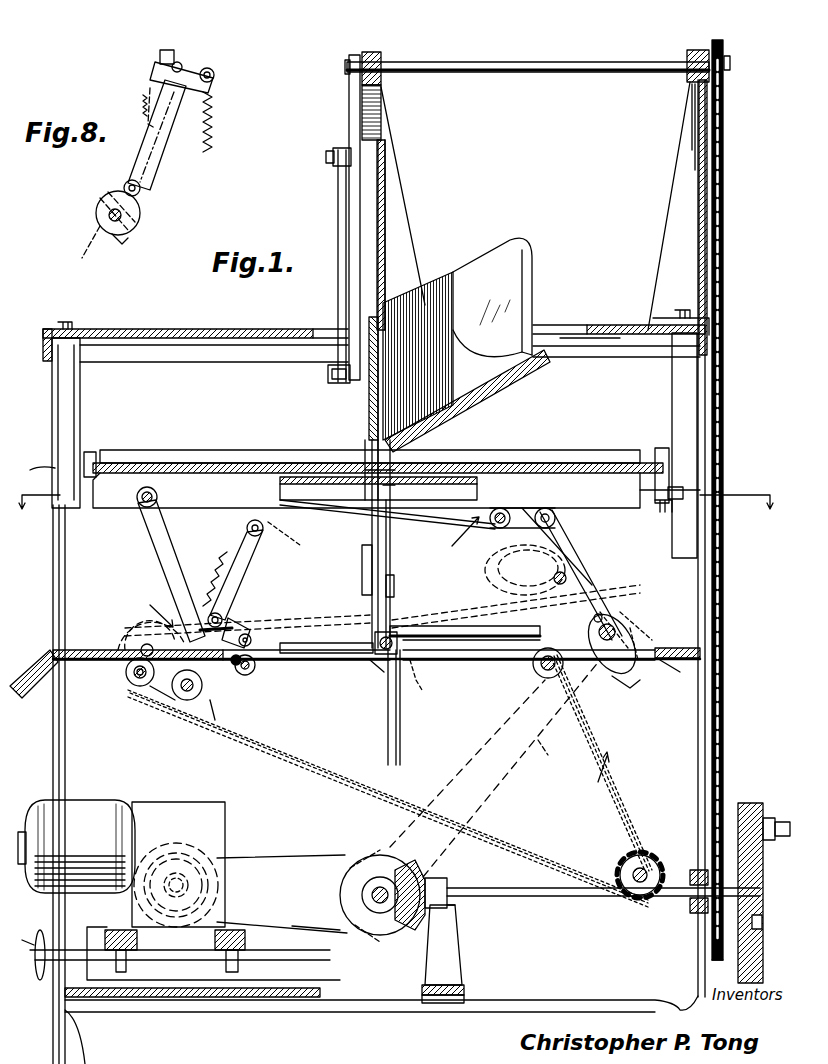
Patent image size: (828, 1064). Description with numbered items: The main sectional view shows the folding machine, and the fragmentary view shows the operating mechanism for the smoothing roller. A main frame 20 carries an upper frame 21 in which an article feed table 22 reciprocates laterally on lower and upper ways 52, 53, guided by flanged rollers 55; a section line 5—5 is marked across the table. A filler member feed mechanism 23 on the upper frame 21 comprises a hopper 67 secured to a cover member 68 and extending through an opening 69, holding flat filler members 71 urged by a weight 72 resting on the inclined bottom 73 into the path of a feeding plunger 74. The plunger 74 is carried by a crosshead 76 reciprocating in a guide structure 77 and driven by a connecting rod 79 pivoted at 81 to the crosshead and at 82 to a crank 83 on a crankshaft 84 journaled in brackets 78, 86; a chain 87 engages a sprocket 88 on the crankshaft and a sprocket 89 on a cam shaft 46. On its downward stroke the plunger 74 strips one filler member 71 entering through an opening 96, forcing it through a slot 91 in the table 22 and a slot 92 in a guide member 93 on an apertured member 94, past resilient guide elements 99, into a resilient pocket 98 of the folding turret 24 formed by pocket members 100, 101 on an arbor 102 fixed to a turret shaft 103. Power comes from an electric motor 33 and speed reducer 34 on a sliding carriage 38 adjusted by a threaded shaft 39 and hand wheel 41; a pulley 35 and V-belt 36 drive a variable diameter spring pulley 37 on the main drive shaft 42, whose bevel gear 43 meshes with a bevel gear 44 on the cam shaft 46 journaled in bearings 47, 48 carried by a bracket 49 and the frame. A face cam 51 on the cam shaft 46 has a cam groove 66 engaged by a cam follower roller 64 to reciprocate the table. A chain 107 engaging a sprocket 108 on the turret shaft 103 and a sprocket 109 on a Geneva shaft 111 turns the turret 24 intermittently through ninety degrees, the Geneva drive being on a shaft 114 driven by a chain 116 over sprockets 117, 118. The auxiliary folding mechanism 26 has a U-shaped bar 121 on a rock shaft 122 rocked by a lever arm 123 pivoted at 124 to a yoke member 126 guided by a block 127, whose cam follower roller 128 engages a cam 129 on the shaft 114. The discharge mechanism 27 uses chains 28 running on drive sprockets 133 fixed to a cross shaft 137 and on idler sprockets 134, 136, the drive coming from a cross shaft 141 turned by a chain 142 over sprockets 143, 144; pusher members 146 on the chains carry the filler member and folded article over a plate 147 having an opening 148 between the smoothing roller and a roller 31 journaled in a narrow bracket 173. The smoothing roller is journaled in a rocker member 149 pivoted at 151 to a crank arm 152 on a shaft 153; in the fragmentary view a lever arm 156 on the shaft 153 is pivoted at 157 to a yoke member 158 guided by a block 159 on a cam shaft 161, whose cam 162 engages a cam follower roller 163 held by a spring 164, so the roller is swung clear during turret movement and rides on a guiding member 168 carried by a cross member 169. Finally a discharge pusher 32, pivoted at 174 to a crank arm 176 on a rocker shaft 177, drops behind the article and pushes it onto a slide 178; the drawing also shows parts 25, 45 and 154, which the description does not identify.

In FIG. 1, the section line 5 is at (395, 498).
In FIG. 1, the main frame 20 is at (706, 580).
In FIG. 1, the upper frame 21 is at (697, 398).
In FIG. 1, the article feed table 22 is at (570, 450).
In FIG. 1, the filler member feed mechanism 23 is at (320, 310).
In FIG. 1, the rotating folding turret 24 is at (365, 614).
In FIG. 1, the pivot pin 25 is at (252, 638).
In FIG. 1, the auxiliary folding mechanism 26 is at (458, 536).
In FIG. 1, the discharge mechanism 27 is at (150, 609).
In FIG. 1, the discharge chains 28 is at (330, 775).
In FIG. 1, the smoothing and compressing roller 31 is at (250, 668).
In FIG. 1, the discharge pusher 32 is at (150, 625).
In FIG. 1, the electric motor 33 is at (88, 808).
In FIG. 1, the speed reducer 34 is at (192, 810).
In FIG. 1, the pulley 35 is at (200, 842).
In FIG. 1, the V-belt 36 is at (270, 855).
In FIG. 1, the variable diameter spring pulley 37 is at (365, 932).
In FIG. 1, the sliding carriage 38 is at (115, 930).
In FIG. 1, the threaded shaft 39 is at (178, 962).
In FIG. 1, the hand wheel 41 is at (42, 928).
In FIG. 1, the main drive shaft 42 is at (370, 894).
In FIG. 1, the bevel gear 43 is at (386, 936).
In FIG. 1, the bevel gear 44 is at (412, 930).
In FIG. 1, the bearing 45 is at (440, 877).
In FIG. 1, the cam shaft 46 is at (540, 897).
In FIG. 1, the bearing 47 is at (452, 906).
In FIG. 1, the bearing 48 is at (690, 914).
In FIG. 1, the bracket 49 is at (458, 950).
In FIG. 1, the face cam 51 is at (745, 962).
In FIG. 1, the lower ways 52 is at (80, 505).
In FIG. 1, the upper ways 53 is at (96, 455).
In FIG. 1, the flanged rollers 55 is at (683, 490).
In FIG. 1, the cam follower roller 64 is at (765, 818).
In FIG. 1, the cam groove 66 is at (762, 922).
In FIG. 1, the hopper 67 is at (490, 258).
In FIG. 1, the upper cover member 68 is at (605, 325).
In FIG. 1, the opening 69 is at (576, 325).
In FIG. 1, the filler members 71 is at (438, 278).
In FIG. 1, the weight 72 is at (480, 345).
In FIG. 1, the inclined bottom 73 is at (480, 400).
In FIG. 1, the feeding plunger 74 is at (372, 424).
In FIG. 1, the crosshead 76 is at (369, 400).
In FIG. 1, the guide structure 77 is at (386, 200).
In FIG. 1, the bracket 78 is at (381, 125).
In FIG. 1, the connecting rod 79 is at (338, 212).
In FIG. 1, the pivot 81 is at (328, 376).
In FIG. 1, the pivot 82 is at (330, 148).
In FIG. 1, the crank 83 is at (349, 98).
In FIG. 1, the crankshaft 84 is at (452, 62).
In FIG. 1, the bracket 86 is at (699, 126).
In FIG. 1, the chain 87 is at (725, 200).
In FIG. 1, the sprocket 88 is at (730, 60).
In FIG. 1, the sprocket 89 is at (711, 958).
In FIG. 1, the slot 91 is at (386, 470).
In FIG. 1, the slot 92 is at (365, 468).
In FIG. 1, the guide member 93 is at (478, 492).
In FIG. 1, the apertured member 94 is at (598, 508).
In FIG. 1, the opening 96 is at (400, 300).
In FIG. 1, the resilient pocket 98 is at (390, 540).
In FIG. 1, the resilient guide elements 99 is at (362, 555).
In FIG. 1, the pocket member 100 is at (392, 580).
In FIG. 1, the pocket member 101 is at (372, 530).
In FIG. 1, the arbor 102 is at (380, 690).
In FIG. 1, the turret shaft 103 is at (375, 640).
In FIG. 1, the chain 107 is at (455, 588).
In FIG. 1, the sprocket 108 is at (418, 712).
In FIG. 1, the sprocket 109 is at (496, 596).
In FIG. 1, the Geneva shaft 111 is at (575, 560).
In FIG. 1, the shaft 114 is at (632, 600).
In FIG. 1, the chain 116 is at (548, 770).
In FIG. 1, the sprocket 117 is at (636, 614).
In FIG. 1, the sprocket 118 is at (350, 905).
In FIG. 1, the U-shaped bar 121 is at (437, 522).
In FIG. 1, the rock shaft 122 is at (496, 530).
In FIG. 1, the lever arm 123 is at (542, 508).
In FIG. 1, the pivot 124 is at (556, 520).
In FIG. 1, the yoke member 126 is at (572, 580).
In FIG. 1, the block 127 is at (645, 626).
In FIG. 1, the cam follower roller 128 is at (604, 612).
In FIG. 1, the cam 129 is at (630, 686).
In FIG. 1, the drive sprockets 133 is at (128, 684).
In FIG. 1, the idler sprocket 134 is at (546, 680).
In FIG. 1, the idler sprocket 136 is at (652, 860).
In FIG. 1, the cross shaft 137 is at (140, 676).
In FIG. 1, the cross shaft 141 is at (140, 645).
In FIG. 1, the chain 142 is at (260, 612).
In FIG. 1, the sprocket 143 is at (118, 630).
In FIG. 1, the sprocket 144 is at (640, 604).
In FIG. 1, the pusher members 146 is at (240, 718).
In FIG. 1, the plate 147 is at (684, 660).
In FIG. 1, the opening 148 is at (700, 652).
In FIG. 1, the rocker member 149 is at (222, 616).
In FIG. 1, the pivot 151 is at (210, 578).
In FIG. 8, the crank arm 152 is at (150, 88).
In FIG. 1, the crank arm 152 is at (285, 540).
In FIG. 8, the shaft 153 is at (180, 58).
In FIG. 1, the shaft 153 is at (263, 530).
In FIG. 1, the lever 154 is at (214, 560).
In FIG. 8, the lever arm 156 is at (198, 60).
In FIG. 8, the pivot 157 is at (216, 75).
In FIG. 8, the yoke member 158 is at (162, 160).
In FIG. 8, the block 159 is at (87, 248).
In FIG. 8, the cam shaft 161 is at (130, 240).
In FIG. 1, the cam shaft 161 is at (188, 700).
In FIG. 8, the cam 162 is at (140, 218).
In FIG. 8, the cam follower roller 163 is at (120, 182).
In FIG. 8, the spring 164 is at (214, 122).
In FIG. 1, the guiding member 168 is at (172, 700).
In FIG. 1, the cross member 169 is at (240, 668).
In FIG. 1, the narrow bracket 173 is at (213, 720).
In FIG. 1, the pivot 174 is at (192, 616).
In FIG. 1, the crank arm 176 is at (160, 540).
In FIG. 1, the rocker shaft 177 is at (158, 498).
In FIG. 1, the slide 178 is at (35, 670).